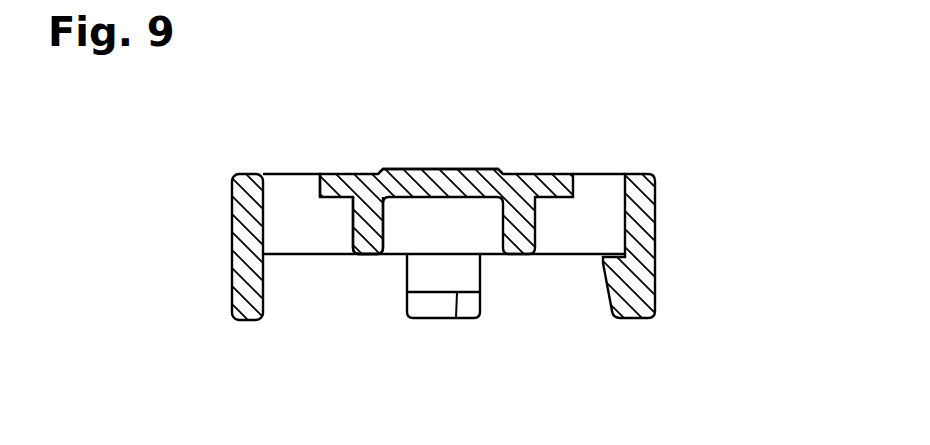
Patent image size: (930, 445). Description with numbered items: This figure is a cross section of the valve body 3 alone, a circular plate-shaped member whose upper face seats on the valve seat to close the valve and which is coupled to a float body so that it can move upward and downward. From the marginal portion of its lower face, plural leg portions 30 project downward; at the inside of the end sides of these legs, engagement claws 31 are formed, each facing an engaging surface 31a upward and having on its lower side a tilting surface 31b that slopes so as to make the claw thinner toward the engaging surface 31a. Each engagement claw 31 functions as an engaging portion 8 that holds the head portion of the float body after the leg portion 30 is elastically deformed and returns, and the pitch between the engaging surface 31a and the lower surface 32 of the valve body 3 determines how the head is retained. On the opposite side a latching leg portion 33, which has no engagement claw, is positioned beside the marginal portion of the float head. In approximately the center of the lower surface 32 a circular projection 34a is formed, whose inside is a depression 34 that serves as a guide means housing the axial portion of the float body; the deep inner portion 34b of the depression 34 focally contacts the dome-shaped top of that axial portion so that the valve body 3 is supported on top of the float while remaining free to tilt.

The valve body 3 is at (479, 264).
The engaging portion 8 is at (657, 283).
The leg portion 30 is at (479, 264).
The engagement claw 31 is at (607, 264).
The engaging surface 31a is at (456, 318).
The tilting surface 31b is at (523, 264).
The lower surface 32 is at (318, 200).
The latching leg portion 33 is at (232, 300).
The depression 34 is at (418, 205).
The circular projection 34a is at (363, 254).
The deep inner portion 34b is at (420, 203).